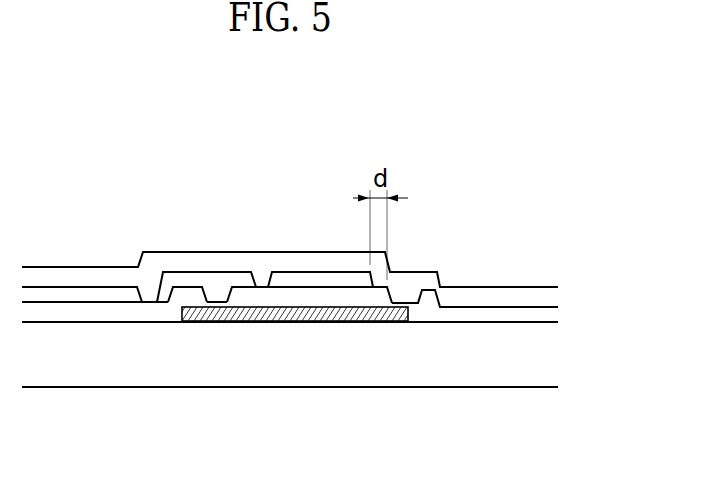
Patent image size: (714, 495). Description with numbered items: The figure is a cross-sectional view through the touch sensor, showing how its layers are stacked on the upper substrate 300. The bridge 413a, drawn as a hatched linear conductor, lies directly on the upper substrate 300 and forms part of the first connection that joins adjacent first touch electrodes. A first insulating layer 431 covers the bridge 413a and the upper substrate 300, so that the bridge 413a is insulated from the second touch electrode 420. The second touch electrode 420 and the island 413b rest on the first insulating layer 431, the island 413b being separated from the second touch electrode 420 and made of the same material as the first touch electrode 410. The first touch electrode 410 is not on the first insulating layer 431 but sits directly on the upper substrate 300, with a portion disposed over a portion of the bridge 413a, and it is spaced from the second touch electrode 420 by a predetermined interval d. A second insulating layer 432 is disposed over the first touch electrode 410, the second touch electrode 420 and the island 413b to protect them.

The upper substrate 300 is at (538, 355).
The first touch electrode 410 is at (408, 300).
The bridge 413a is at (337, 312).
The island 413b is at (215, 280).
The second touch electrode 420 is at (305, 281).
The first insulating layer 431 is at (262, 297).
The second insulating layer 432 is at (84, 274).